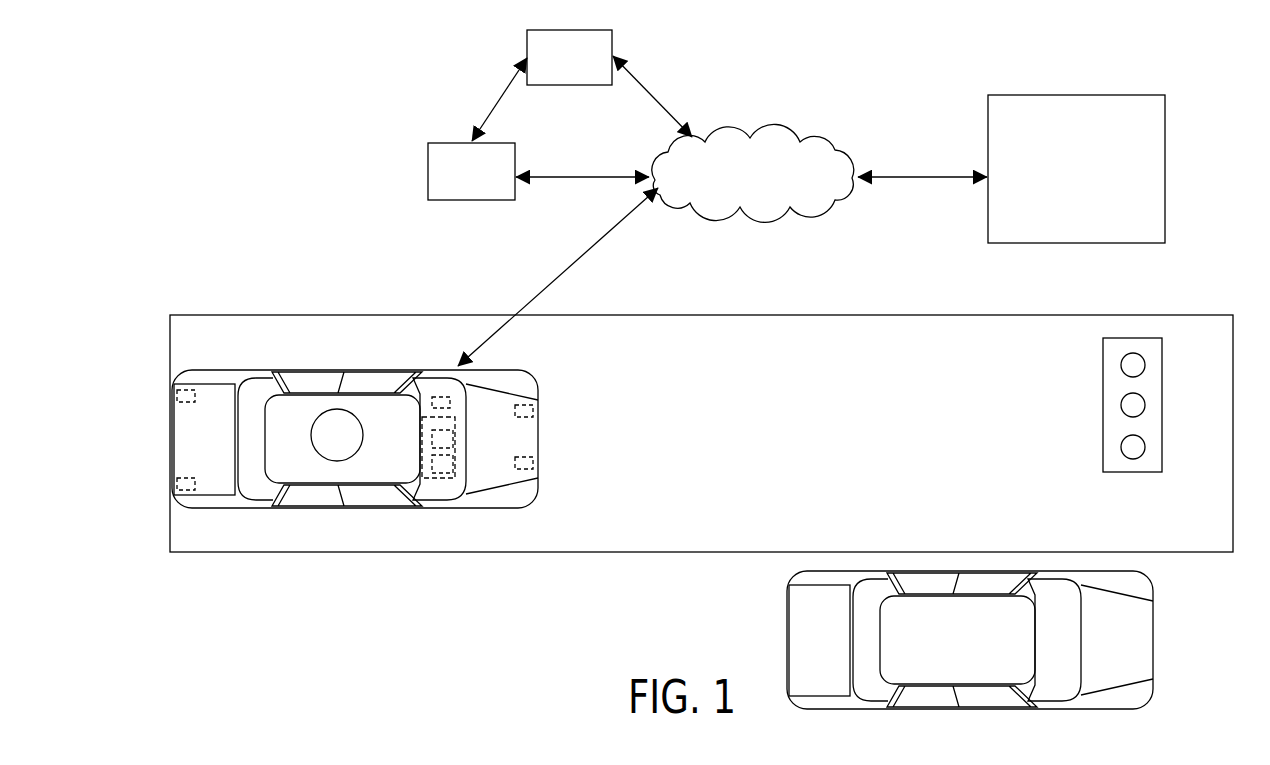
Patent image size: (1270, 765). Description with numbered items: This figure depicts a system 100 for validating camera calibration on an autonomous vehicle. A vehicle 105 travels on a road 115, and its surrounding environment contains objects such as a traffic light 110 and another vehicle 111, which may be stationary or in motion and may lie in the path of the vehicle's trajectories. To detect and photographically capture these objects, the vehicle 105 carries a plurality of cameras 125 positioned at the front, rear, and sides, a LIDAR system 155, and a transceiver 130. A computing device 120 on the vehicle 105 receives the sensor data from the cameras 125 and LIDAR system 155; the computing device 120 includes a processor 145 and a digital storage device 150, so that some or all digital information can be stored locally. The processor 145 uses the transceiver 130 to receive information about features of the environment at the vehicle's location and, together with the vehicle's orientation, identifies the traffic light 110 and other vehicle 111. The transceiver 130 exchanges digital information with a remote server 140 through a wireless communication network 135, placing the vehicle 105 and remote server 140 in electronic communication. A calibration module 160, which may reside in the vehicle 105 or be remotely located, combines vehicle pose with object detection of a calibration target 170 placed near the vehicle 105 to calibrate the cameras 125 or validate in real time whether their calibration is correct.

The system 100 is at (368, 160).
The vehicle 105 is at (252, 370).
The traffic light 110 is at (1103, 445).
The other vehicle 111 is at (1153, 672).
The road 115 is at (352, 536).
The computing device 120 is at (457, 455).
The cameras 125 is at (186, 390).
The transceiver 130 is at (450, 399).
The wireless communication network 135 is at (766, 188).
The remote server 140 is at (1093, 185).
The processor 145 is at (465, 467).
The digital storage device 150 is at (455, 437).
The LIDAR system 155 is at (333, 437).
The calibration module 160 is at (585, 77).
The calibration target 170 is at (488, 190).